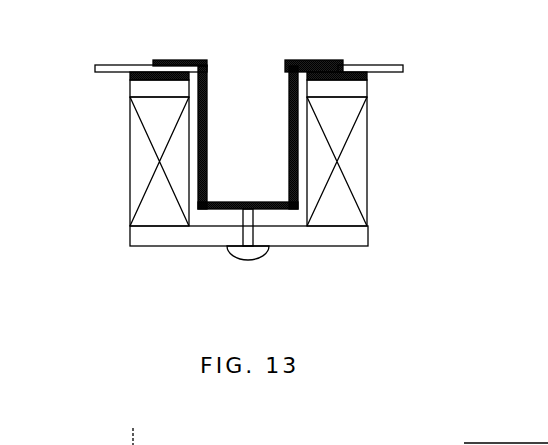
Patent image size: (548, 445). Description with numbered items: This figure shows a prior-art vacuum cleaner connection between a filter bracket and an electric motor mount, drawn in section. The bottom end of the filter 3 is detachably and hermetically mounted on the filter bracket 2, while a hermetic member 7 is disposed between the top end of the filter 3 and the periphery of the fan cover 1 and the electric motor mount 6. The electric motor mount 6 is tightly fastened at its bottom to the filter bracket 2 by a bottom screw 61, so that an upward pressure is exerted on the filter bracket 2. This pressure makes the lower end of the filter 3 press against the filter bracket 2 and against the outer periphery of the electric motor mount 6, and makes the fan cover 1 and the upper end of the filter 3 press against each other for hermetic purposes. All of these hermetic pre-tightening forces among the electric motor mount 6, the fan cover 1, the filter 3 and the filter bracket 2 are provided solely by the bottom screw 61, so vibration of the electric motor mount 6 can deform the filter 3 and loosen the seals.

The fan cover 1 is at (363, 70).
The filter bracket 2 is at (329, 240).
The filter 3 is at (355, 167).
The electric motor mount 6 is at (201, 145).
The hermetic member 7 is at (146, 77).
The bottom screw 61 is at (244, 251).